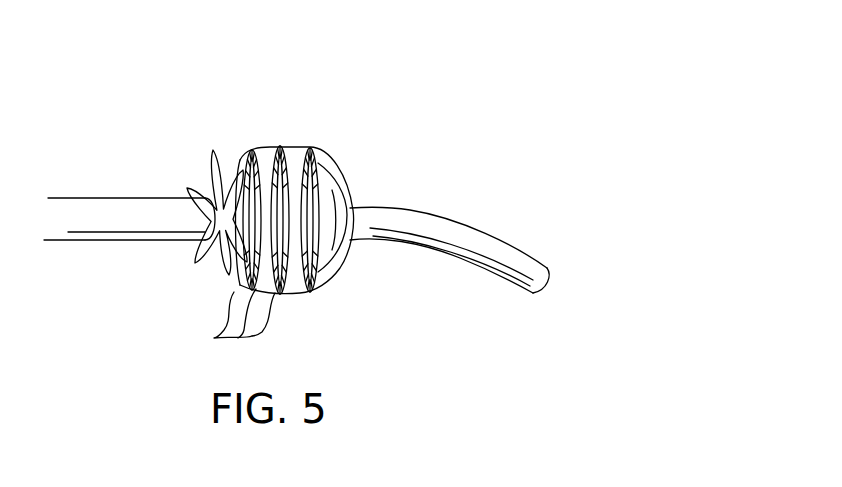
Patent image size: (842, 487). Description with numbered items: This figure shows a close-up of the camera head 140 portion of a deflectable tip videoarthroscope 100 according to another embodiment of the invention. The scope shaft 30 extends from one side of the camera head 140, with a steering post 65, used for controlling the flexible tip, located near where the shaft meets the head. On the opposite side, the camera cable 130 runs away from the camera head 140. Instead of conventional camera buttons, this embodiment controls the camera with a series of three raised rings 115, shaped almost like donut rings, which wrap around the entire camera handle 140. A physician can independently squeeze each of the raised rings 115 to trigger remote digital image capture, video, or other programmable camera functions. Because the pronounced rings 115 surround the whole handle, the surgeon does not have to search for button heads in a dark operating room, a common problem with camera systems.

The deflectable tip videoarthroscope 100 is at (388, 100).
The scope shaft 30 is at (105, 222).
The steering post 65 is at (212, 172).
The camera head 140 is at (328, 270).
The raised rings 115 is at (230, 338).
The camera cable 130 is at (420, 208).